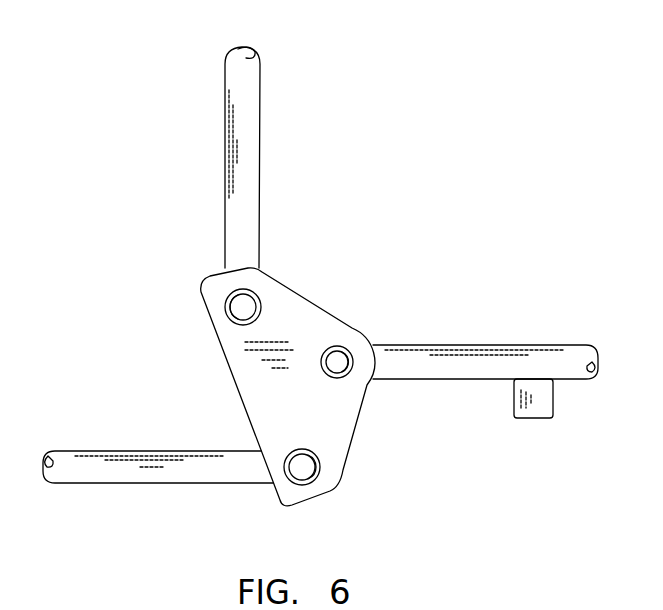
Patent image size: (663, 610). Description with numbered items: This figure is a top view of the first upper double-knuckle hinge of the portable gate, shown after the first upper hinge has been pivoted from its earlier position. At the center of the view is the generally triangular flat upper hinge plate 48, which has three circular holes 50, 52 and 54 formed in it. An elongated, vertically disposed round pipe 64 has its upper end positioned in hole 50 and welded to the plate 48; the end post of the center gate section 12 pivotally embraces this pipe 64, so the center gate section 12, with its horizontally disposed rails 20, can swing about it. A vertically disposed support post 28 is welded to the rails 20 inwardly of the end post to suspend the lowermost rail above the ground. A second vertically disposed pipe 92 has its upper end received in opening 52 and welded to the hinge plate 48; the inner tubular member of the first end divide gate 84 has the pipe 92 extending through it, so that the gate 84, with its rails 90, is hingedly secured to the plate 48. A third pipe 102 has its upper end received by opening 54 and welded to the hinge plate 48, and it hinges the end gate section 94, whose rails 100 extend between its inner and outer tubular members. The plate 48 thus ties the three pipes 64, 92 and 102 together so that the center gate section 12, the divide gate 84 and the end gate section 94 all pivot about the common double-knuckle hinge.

The center gate section 12 is at (473, 386).
The rails 20 is at (548, 353).
The support post 28 is at (553, 412).
The upper hinge plate 48 is at (217, 372).
The circular hole 50 is at (327, 347).
The circular hole 52 is at (250, 290).
The circular hole 54 is at (311, 484).
The round pipe 64 is at (373, 375).
The first end divide gate 84 is at (212, 128).
The rails 90 is at (252, 183).
The pipe 92 is at (240, 327).
The end gate section 94 is at (170, 503).
The rails 100 is at (105, 460).
The pipe 102 is at (320, 452).